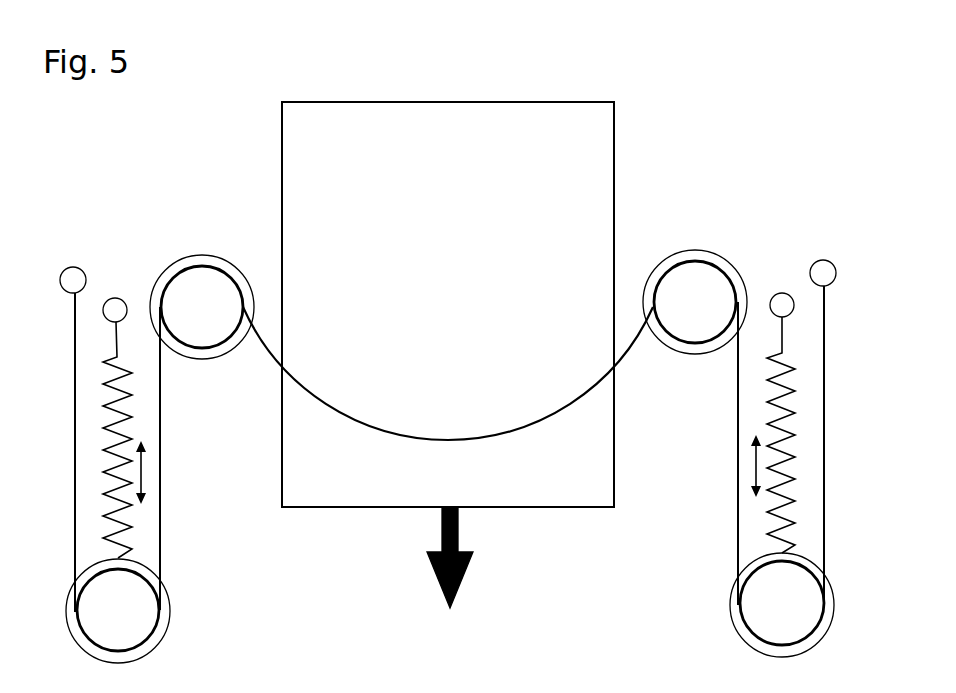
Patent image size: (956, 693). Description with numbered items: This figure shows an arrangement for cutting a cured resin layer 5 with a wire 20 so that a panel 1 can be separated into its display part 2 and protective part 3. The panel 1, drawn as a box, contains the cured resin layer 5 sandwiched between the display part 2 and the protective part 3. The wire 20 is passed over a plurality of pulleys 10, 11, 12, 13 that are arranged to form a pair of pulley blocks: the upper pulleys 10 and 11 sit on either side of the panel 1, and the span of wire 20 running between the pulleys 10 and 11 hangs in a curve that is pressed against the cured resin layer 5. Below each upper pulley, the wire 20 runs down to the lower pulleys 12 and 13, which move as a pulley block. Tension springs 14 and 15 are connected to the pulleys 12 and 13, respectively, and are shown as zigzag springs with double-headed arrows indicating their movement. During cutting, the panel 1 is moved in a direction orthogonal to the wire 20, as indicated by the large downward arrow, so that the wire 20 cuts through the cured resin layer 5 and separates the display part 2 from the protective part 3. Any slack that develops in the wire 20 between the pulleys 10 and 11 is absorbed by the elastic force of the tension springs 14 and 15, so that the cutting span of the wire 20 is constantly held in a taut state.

The panel 1 is at (628, 104).
The display part 2 is at (614, 157).
The protective part 3 is at (448, 304).
The cured resin layer 5 is at (582, 222).
The pulley 10 is at (715, 274).
The pulley 11 is at (178, 280).
The pulley 12 is at (755, 617).
The pulley 13 is at (147, 624).
The tension spring 14 is at (787, 413).
The tension spring 15 is at (115, 415).
The wire 20 is at (612, 350).